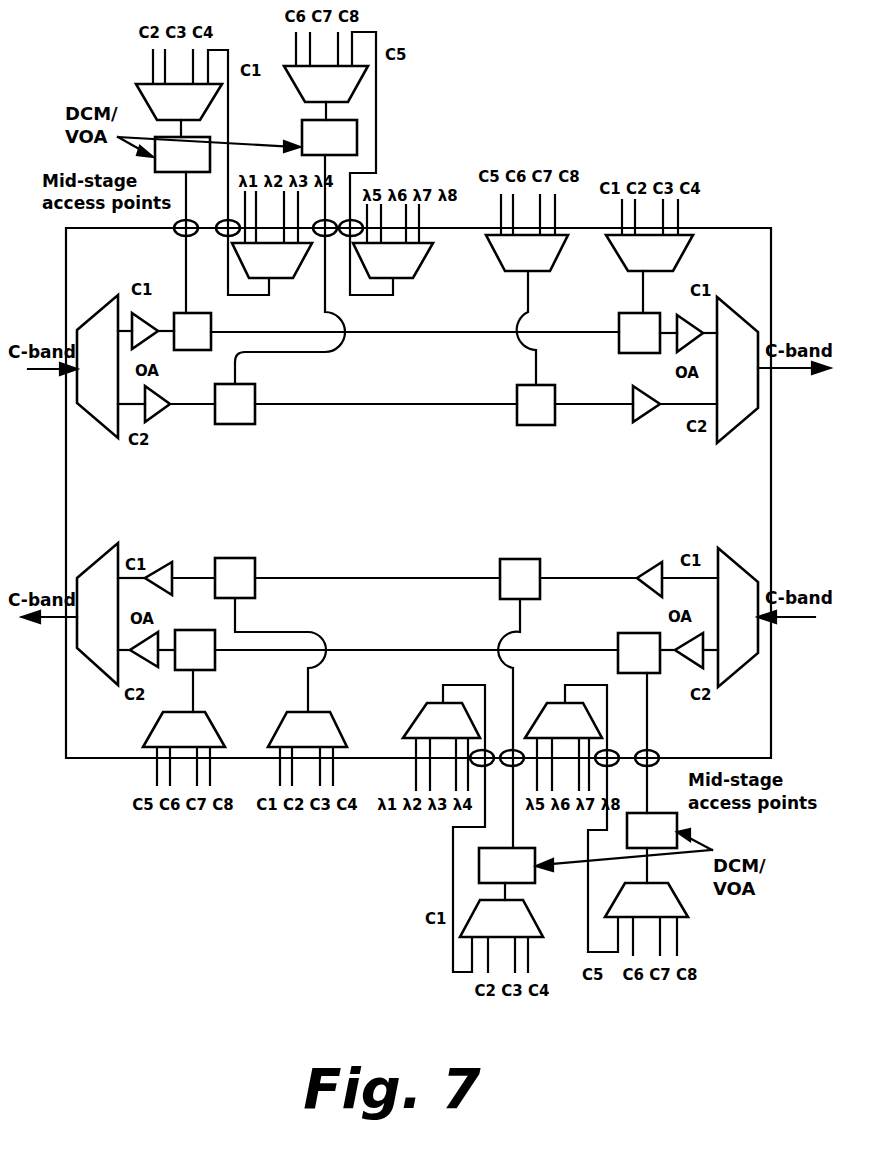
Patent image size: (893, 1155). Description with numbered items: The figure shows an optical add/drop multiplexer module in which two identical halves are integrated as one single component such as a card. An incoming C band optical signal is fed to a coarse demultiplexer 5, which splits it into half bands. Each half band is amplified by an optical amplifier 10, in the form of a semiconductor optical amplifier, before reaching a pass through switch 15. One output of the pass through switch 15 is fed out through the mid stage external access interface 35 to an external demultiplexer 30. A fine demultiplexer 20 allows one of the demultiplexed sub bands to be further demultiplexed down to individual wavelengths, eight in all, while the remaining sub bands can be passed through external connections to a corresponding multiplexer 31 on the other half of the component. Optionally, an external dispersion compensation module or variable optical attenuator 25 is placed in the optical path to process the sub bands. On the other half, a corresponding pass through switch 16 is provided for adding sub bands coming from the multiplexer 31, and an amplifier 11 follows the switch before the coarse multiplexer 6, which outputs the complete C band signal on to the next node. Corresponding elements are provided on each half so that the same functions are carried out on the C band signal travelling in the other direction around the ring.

The coarse demultiplexer 5 is at (87, 383).
The coarse multiplexer 6 is at (729, 385).
The optical amplifier 10 is at (140, 332).
The amplifier 11 is at (683, 333).
The pass through switch 15 is at (198, 351).
The pass through switch 16 is at (538, 425).
The fine demultiplexer 20 is at (257, 273).
The DCM or VOA 25 is at (169, 170).
The external demultiplexer 30 is at (167, 113).
The multiplexer 31 is at (514, 267).
The mid stage external access interface 35 is at (145, 212).